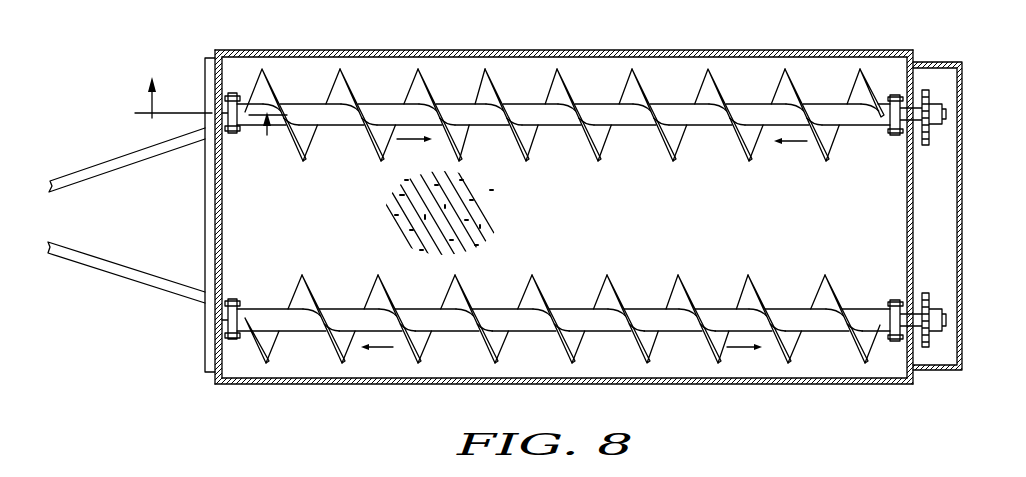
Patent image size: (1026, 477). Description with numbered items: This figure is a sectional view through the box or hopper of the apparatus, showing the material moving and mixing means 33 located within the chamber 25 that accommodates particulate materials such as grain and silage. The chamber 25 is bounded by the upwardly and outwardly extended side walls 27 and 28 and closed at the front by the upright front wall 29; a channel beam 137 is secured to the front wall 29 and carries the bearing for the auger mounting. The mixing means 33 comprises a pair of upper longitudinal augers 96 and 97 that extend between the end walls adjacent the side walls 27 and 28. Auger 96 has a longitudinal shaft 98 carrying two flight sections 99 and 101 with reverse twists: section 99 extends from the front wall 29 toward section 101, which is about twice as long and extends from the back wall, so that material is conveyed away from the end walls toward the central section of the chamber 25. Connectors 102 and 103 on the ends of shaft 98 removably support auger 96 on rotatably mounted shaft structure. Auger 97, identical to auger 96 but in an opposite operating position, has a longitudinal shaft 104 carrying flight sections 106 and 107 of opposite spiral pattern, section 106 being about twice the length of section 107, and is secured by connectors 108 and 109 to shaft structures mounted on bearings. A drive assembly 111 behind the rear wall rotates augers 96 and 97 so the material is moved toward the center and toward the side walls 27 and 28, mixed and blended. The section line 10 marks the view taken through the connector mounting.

The section line 10- 10 is at (200, 129).
The chamber 25 is at (603, 211).
The side wall 27 is at (748, 52).
The side wall 28 is at (814, 385).
The front wall 29 is at (228, 222).
The material moving and mixing means 33 is at (584, 217).
The upper longitudinal auger 96 is at (694, 82).
The upper longitudinal auger 97 is at (655, 359).
The longitudinal shaft 98 is at (447, 108).
The flight section 99 is at (403, 90).
The flight section 101 is at (797, 92).
The connector 102 is at (235, 84).
The connector 103 is at (895, 86).
The longitudinal shaft 104 is at (782, 320).
The flight section 106 is at (392, 294).
The flight section 107 is at (838, 300).
The connector 108 is at (234, 284).
The connector 109 is at (893, 291).
The drive assembly 111 is at (943, 376).
The channel beam 137 is at (208, 357).